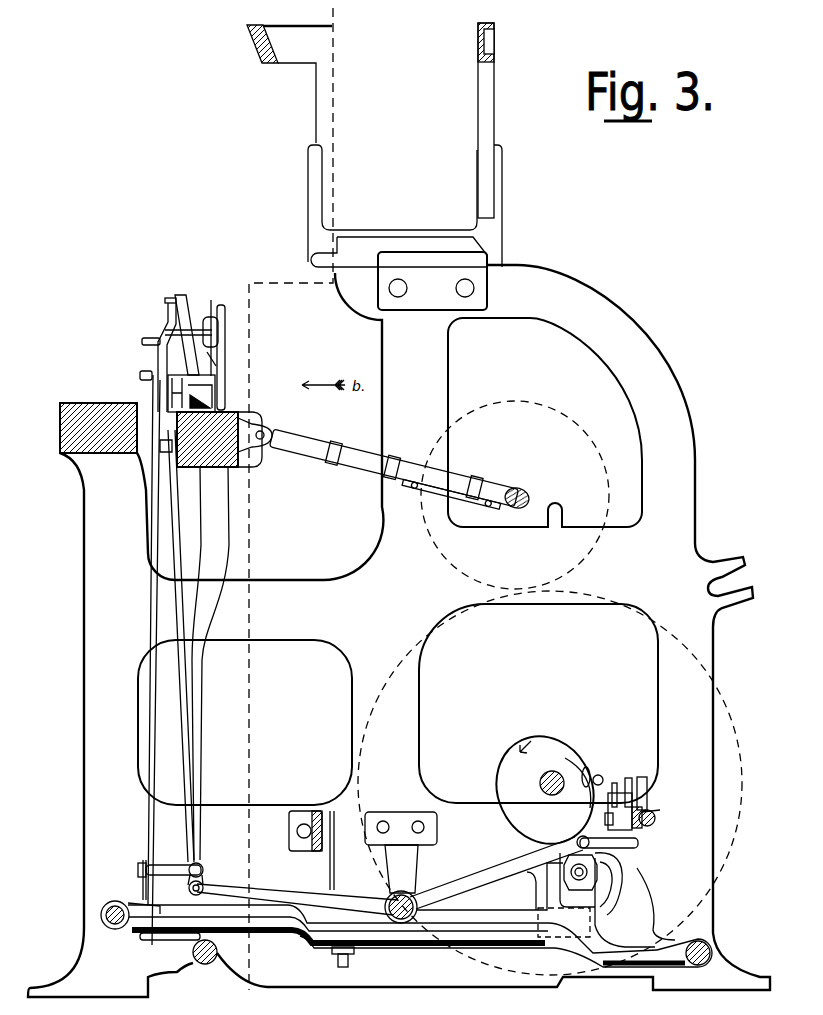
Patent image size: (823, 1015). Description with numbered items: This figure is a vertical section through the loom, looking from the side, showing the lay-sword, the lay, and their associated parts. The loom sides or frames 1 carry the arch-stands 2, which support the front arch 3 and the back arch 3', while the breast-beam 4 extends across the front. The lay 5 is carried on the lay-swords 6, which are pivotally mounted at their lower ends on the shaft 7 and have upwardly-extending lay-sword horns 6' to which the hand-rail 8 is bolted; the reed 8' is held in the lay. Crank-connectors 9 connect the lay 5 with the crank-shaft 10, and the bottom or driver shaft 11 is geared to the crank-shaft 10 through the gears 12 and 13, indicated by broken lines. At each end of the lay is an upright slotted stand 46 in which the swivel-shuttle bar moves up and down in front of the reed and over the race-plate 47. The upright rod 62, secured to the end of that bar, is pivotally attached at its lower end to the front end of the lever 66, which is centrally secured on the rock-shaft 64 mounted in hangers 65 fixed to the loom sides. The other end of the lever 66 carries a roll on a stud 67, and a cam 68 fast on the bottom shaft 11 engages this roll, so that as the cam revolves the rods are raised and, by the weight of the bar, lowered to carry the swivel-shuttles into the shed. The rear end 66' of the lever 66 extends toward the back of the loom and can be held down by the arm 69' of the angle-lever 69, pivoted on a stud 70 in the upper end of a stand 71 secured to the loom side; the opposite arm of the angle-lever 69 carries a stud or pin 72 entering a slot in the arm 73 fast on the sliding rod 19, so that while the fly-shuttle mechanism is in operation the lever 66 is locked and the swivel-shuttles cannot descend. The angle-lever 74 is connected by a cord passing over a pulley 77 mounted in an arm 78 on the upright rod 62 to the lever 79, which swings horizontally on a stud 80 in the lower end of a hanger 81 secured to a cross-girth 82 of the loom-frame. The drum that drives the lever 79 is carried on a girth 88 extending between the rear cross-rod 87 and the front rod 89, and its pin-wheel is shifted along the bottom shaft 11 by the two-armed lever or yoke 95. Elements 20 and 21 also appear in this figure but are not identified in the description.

The loom sides or frames 1 is at (713, 665).
The arch-stands 2 is at (490, 231).
The front arch 3 is at (289, 84).
The back arch 3' is at (496, 120).
The breast-beam 4 is at (78, 418).
The lay 5 is at (189, 482).
The lay-swords 6 is at (217, 663).
The lay-sword horns 6' is at (233, 339).
The shaft 7 is at (206, 963).
The hand-rail 8 is at (210, 326).
The reed 8' is at (225, 355).
The crank-connectors 9 is at (320, 447).
The crank-shaft 10 is at (494, 486).
The bottom or driver shaft 11 is at (565, 760).
The gear 12 is at (535, 404).
The gear 13 is at (561, 783).
The sliding rod 19 is at (656, 820).
The bolt 20 is at (620, 866).
The bracket 21 is at (627, 887).
The upright slotted stand 46 is at (181, 295).
The race-plate 47 is at (225, 409).
The upright rod 62 is at (188, 762).
The rock-shaft 64 is at (413, 897).
The hangers 65 is at (391, 863).
The lever 66 is at (390, 876).
The rear end of lever 66' is at (627, 842).
The stud 67 is at (575, 843).
The cam 68 is at (500, 780).
The angle-lever 69 is at (633, 784).
The arm of angle-lever 69' is at (619, 777).
The stud 70 is at (610, 822).
The stand 71 is at (645, 816).
The stud or pin 72 is at (648, 782).
The arm 73 is at (660, 808).
The angle-lever 74 is at (165, 350).
The pulley 77 is at (138, 880).
The arm 78 is at (165, 864).
The lever 79 is at (165, 942).
The stud 80 is at (336, 958).
The hanger 81 is at (335, 830).
The cross-girth 82 is at (294, 821).
The rear cross-rod 87 is at (708, 949).
The girth 88 is at (640, 975).
The front rod 89 is at (105, 922).
The two-armed lever or yoke 95 is at (588, 768).